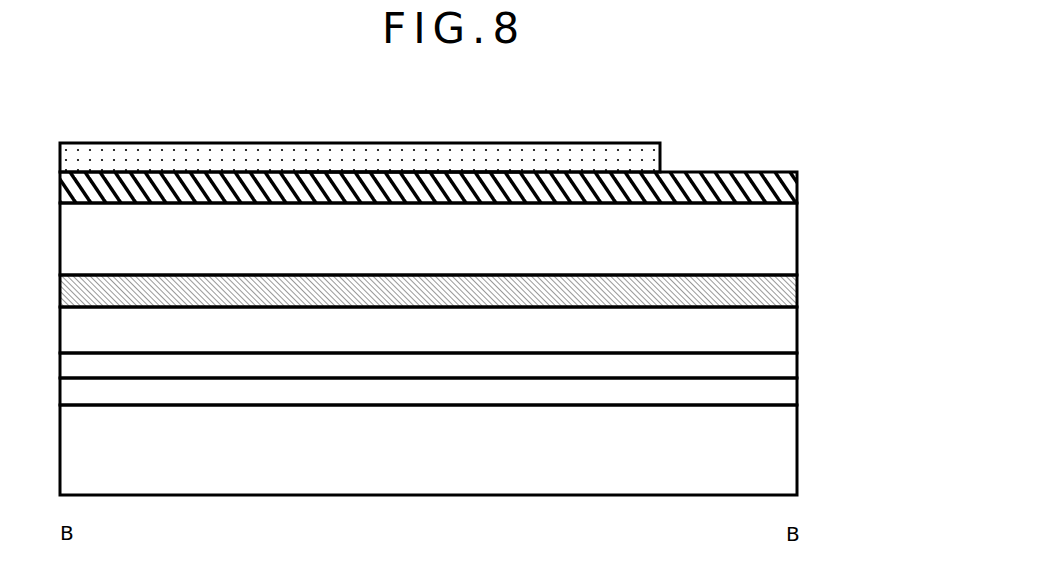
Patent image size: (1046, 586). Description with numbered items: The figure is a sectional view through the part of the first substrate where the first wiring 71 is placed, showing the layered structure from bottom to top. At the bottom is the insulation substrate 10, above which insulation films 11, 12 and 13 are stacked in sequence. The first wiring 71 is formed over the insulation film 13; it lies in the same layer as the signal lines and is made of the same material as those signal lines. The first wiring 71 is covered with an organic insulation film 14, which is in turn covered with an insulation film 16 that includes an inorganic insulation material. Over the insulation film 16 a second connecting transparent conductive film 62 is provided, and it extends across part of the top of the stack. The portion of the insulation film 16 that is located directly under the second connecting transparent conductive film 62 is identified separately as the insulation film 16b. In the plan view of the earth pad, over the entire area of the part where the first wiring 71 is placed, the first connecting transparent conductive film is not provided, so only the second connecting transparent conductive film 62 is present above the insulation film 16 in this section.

The insulation substrate 10 is at (797, 450).
The insulation film 11 is at (797, 393).
The insulation film 12 is at (797, 364).
The insulation film 13 is at (797, 328).
The first wiring 71 is at (797, 290).
The organic insulation film 14 is at (797, 238).
The insulation film 16 is at (797, 191).
The insulation film 16b is at (400, 173).
The second connecting transparent conductive film 62 is at (286, 158).